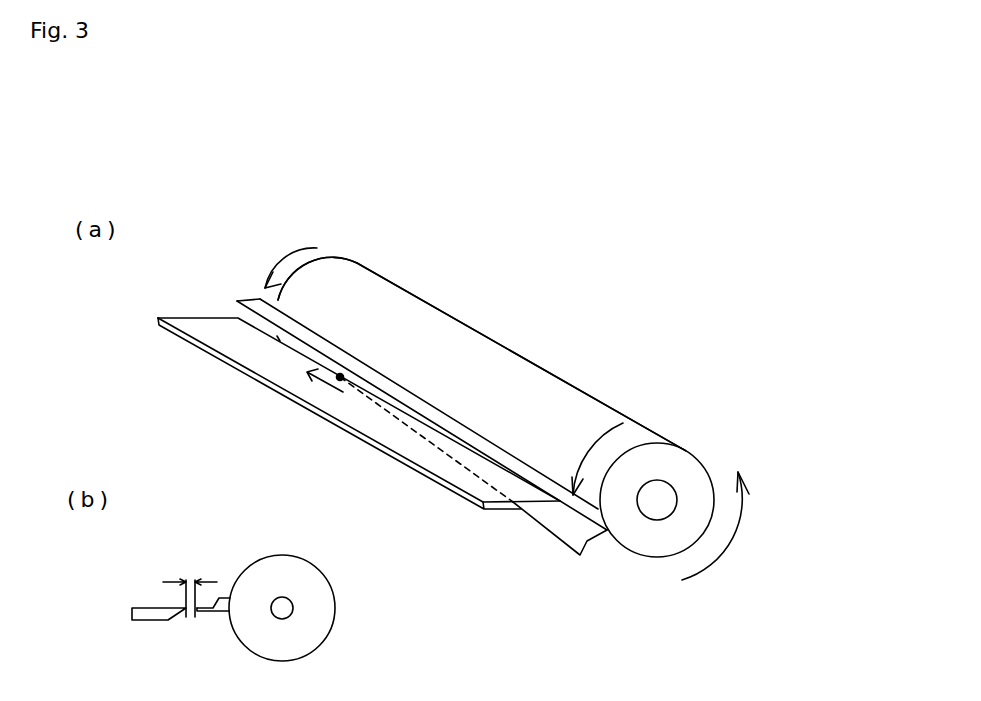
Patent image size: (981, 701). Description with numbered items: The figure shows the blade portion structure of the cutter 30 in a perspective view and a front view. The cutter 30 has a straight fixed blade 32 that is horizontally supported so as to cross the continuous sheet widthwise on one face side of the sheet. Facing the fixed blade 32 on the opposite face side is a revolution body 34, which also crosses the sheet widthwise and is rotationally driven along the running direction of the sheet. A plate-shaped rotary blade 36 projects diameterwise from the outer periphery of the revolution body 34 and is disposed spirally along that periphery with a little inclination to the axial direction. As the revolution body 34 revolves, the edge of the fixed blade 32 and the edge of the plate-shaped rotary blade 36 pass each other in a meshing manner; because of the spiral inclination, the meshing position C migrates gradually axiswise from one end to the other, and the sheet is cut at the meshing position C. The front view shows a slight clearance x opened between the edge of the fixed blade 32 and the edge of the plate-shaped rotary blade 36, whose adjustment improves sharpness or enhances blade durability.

The cutter 30 is at (358, 262).
The fixed blade 32 is at (370, 420).
The revolution body 34 is at (455, 352).
The plate-shaped rotary blade 36 is at (249, 298).
The meshing position C is at (340, 377).
The clearance x is at (186, 578).